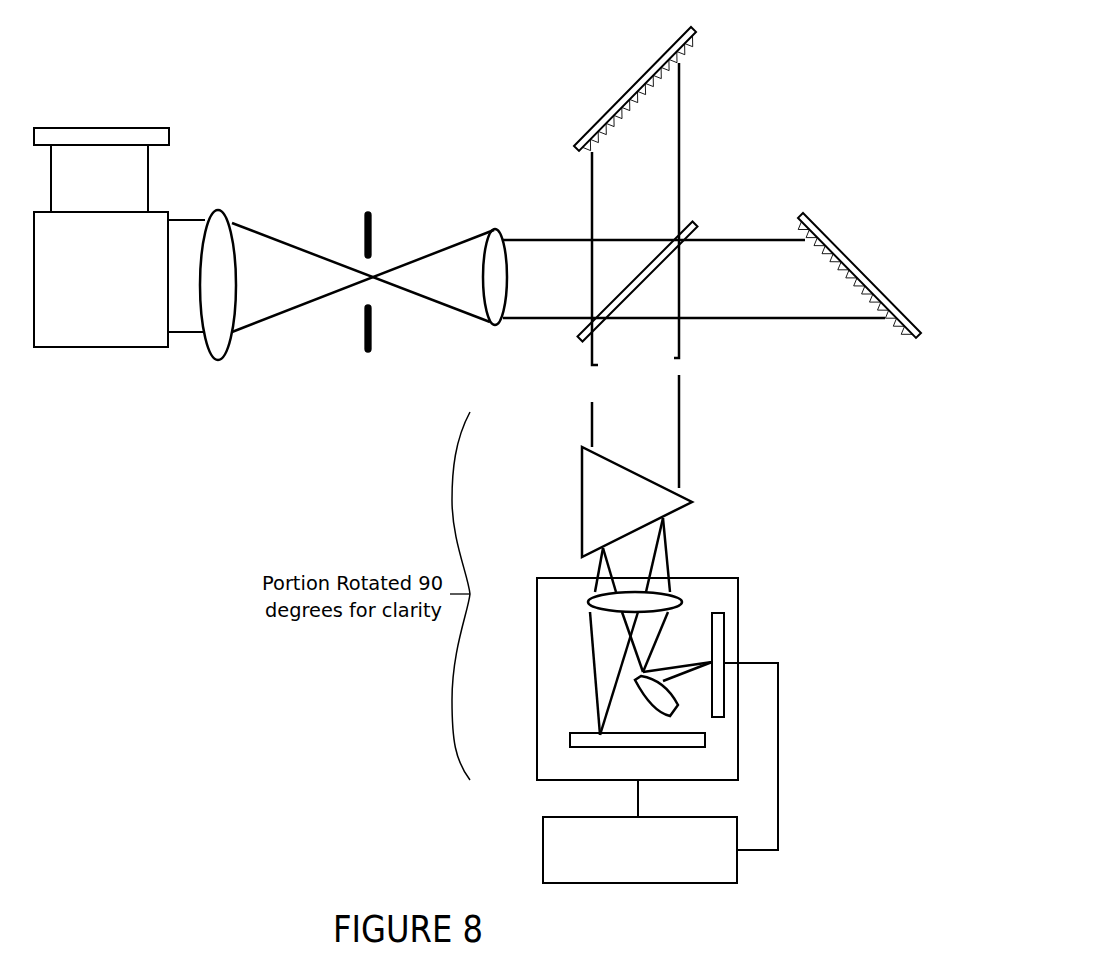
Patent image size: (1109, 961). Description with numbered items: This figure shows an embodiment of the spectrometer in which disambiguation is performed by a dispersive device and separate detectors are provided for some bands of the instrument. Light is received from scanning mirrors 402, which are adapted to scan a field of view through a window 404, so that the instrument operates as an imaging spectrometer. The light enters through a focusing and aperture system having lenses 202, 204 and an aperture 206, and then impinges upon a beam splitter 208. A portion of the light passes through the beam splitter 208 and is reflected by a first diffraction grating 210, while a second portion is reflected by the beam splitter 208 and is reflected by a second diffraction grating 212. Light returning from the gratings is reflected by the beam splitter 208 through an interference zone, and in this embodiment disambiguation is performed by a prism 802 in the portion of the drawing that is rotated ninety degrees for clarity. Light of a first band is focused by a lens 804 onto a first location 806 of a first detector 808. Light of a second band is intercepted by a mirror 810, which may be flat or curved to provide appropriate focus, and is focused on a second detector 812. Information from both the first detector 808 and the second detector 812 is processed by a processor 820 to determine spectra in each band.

The scanning mirrors 402 is at (101, 279).
The window 404 is at (143, 137).
The lens 202 is at (183, 218).
The lens 204 is at (490, 243).
The aperture 206 is at (372, 223).
The beam splitter 208 is at (697, 225).
The first diffraction grating 210 is at (820, 233).
The second diffraction grating 212 is at (694, 31).
The prism 802 is at (670, 502).
The lens 804 is at (670, 602).
The first location 806 is at (598, 732).
The first detector 808 is at (573, 740).
The mirror 810 is at (650, 670).
The second detector 812 is at (725, 625).
The processor 820 is at (622, 874).